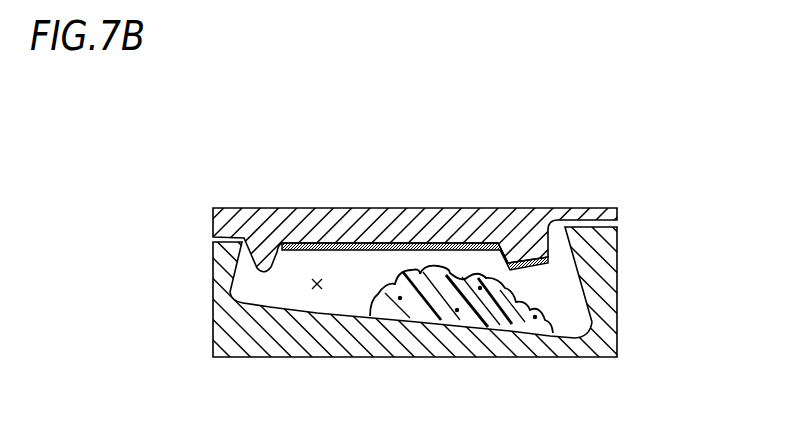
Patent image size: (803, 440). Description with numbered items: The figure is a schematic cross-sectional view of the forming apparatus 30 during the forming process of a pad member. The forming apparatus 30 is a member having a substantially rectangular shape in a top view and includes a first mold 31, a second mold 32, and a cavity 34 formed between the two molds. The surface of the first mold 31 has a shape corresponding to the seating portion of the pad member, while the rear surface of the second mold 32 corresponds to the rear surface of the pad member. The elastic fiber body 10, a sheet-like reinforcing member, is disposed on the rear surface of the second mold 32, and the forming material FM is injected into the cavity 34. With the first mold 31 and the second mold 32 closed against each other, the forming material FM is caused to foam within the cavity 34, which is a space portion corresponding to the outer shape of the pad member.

The forming apparatus 30 is at (663, 190).
The first mold 31 is at (618, 273).
The second mold 32 is at (508, 207).
The elastic fiber body 10 is at (343, 250).
The forming material FM is at (437, 287).
The cavity 34 is at (317, 290).